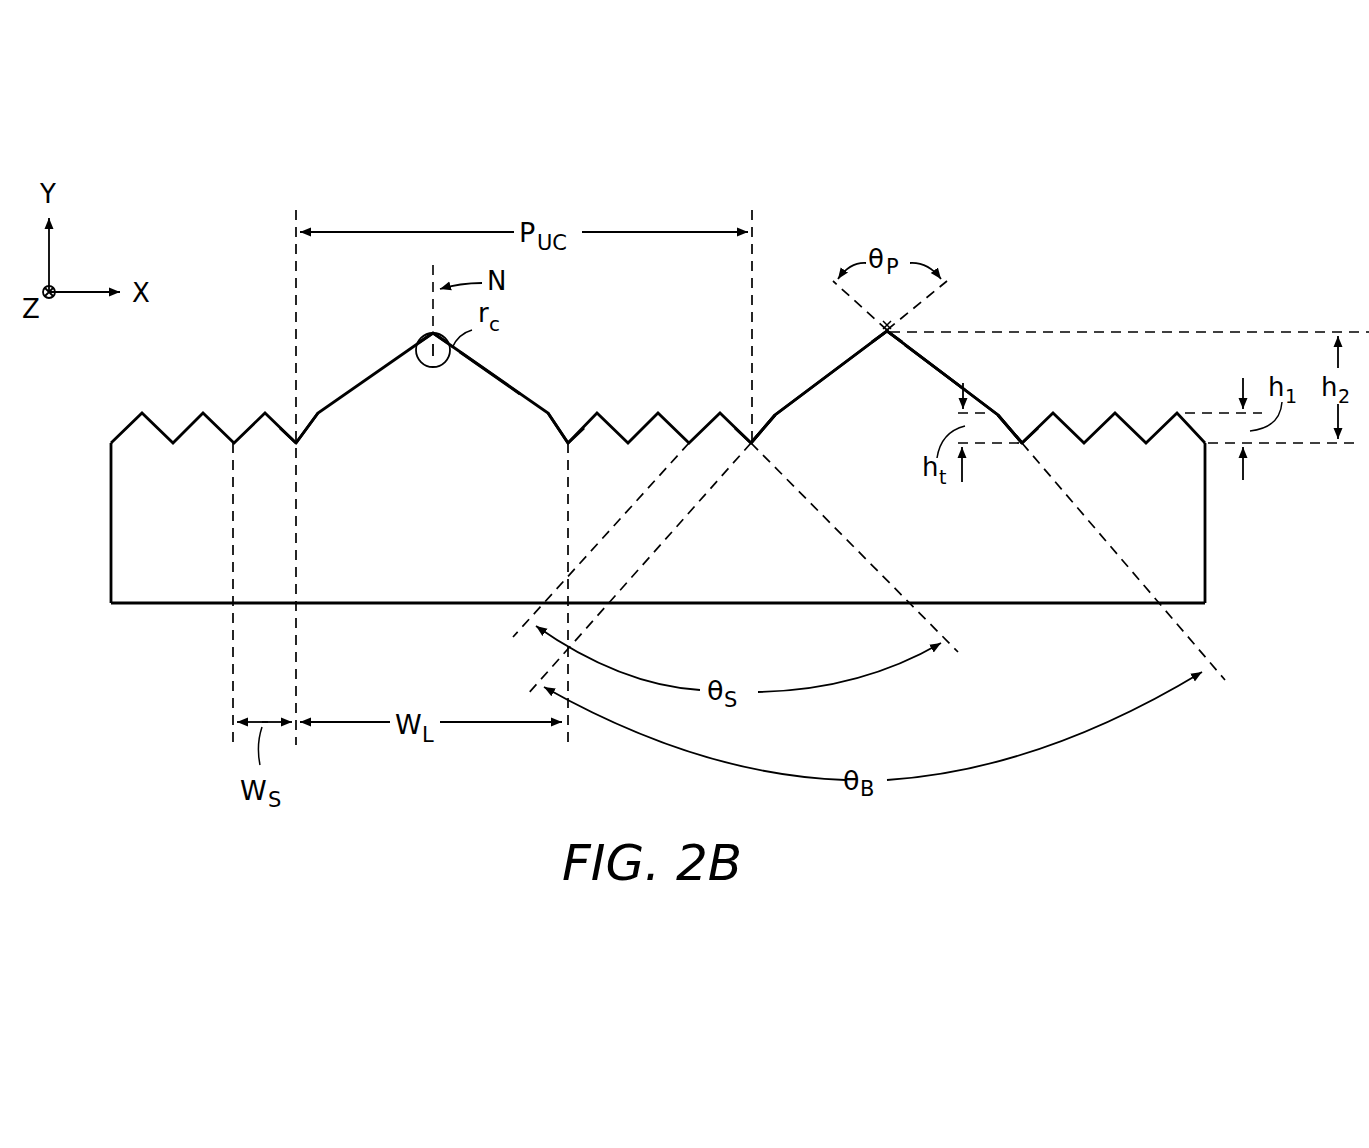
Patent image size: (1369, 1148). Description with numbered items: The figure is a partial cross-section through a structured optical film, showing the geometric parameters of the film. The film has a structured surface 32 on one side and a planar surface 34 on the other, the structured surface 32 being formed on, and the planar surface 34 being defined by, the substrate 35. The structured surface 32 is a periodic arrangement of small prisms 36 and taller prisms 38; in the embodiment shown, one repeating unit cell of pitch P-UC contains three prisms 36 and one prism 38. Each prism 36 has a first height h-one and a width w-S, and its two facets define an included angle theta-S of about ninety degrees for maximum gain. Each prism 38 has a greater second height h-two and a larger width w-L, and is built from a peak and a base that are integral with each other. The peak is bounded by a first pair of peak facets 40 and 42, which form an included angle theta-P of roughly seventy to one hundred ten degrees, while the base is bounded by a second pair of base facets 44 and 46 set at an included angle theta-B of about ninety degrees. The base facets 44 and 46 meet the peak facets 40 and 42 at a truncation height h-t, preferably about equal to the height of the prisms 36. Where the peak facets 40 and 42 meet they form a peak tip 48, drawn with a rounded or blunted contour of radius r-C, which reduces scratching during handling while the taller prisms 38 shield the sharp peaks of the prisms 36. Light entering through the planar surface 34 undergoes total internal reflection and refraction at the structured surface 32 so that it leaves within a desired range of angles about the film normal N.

The structured surface 32 is at (830, 378).
The planar surface 34 is at (410, 606).
The substrate 35 is at (438, 521).
The prisms 36 is at (142, 411).
The prisms 38 is at (496, 370).
The peak facet 40 is at (367, 378).
The peak facet 42 is at (508, 386).
The base facet 44 is at (302, 443).
The base facet 46 is at (556, 437).
The peak tip 48 is at (421, 338).